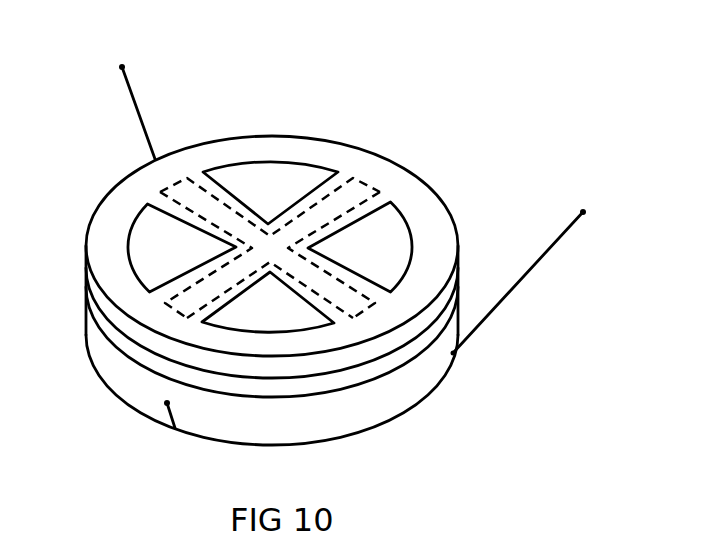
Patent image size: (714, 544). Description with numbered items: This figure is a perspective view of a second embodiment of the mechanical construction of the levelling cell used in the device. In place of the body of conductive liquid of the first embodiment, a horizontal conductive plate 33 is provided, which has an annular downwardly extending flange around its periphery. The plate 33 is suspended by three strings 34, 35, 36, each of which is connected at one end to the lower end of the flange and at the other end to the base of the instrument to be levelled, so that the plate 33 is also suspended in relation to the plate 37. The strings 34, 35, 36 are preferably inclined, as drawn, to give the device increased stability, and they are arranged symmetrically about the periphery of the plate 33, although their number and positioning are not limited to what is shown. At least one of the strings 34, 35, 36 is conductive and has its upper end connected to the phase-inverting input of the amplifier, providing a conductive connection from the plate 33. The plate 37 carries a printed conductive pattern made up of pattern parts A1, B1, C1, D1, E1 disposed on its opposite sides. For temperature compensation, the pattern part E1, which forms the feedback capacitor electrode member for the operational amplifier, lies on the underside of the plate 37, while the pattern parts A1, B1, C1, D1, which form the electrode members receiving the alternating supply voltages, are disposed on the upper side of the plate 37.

The horizontal conductive plate 33 is at (392, 403).
The string 34 is at (132, 90).
The string 35 is at (538, 265).
The string 36 is at (162, 418).
The plate 37 is at (443, 215).
The pattern part A1 is at (282, 175).
The pattern part B1 is at (270, 317).
The pattern part C1 is at (143, 238).
The pattern part D1 is at (383, 223).
The pattern part E1 is at (360, 190).